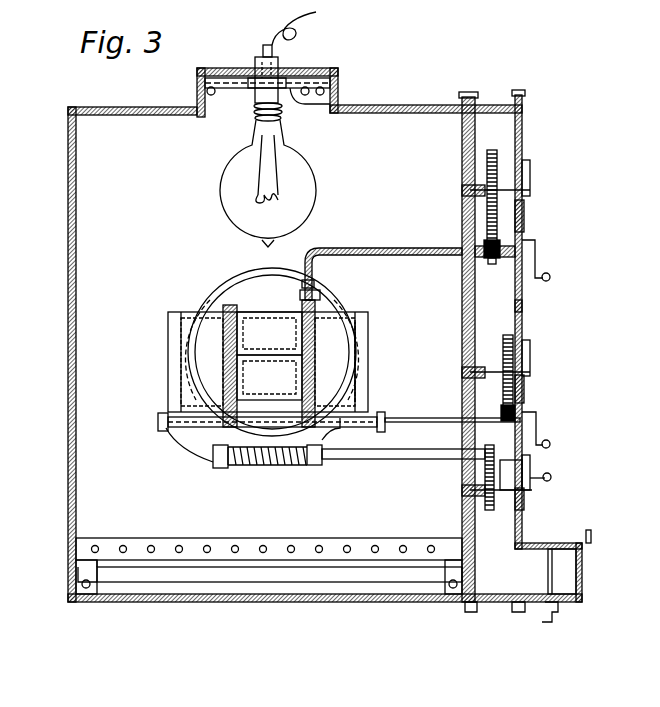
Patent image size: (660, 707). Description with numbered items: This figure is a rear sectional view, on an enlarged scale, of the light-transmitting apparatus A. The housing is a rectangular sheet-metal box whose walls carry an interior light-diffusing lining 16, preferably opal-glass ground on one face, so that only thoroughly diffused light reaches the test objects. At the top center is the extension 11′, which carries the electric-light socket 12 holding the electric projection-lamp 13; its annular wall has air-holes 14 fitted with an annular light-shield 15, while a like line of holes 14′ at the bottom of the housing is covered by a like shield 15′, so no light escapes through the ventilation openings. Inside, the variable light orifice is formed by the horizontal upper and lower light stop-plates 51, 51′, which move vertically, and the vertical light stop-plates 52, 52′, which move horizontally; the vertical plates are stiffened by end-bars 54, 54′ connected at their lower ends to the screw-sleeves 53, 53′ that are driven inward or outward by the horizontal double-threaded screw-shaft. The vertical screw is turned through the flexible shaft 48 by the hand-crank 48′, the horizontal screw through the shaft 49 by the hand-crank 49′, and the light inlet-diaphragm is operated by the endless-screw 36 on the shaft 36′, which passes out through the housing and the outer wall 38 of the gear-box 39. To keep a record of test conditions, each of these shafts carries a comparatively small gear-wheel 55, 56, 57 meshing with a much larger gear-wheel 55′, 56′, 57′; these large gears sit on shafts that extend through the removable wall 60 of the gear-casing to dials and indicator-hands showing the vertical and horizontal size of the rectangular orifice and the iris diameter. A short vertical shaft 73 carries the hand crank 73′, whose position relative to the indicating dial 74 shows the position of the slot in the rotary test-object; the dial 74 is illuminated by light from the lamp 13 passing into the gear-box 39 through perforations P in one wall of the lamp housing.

The apparatus A is at (393, 110).
The top central extension 11′ is at (215, 75).
The electric-light socket 12 is at (282, 65).
The electric projection-lamp 13 is at (268, 183).
The air-holes 14 is at (340, 90).
The line of holes 14′ is at (88, 588).
The annular light-shield 15 is at (214, 88).
The light-shield 15′ is at (269, 560).
The light-diffusing lining 16 is at (124, 115).
The endless-screw 36 is at (262, 462).
The shaft 36′ is at (375, 459).
The outer wall 38 is at (522, 305).
The gear-box 39 is at (494, 264).
The shaft 48 is at (350, 248).
The hand-crank 48′ is at (536, 258).
The shaft 49 is at (400, 418).
The hand-crank 49′ is at (537, 420).
The upper light stop-plate 51 is at (269, 333).
The lower light stop-plate 51′ is at (269, 377).
The vertical light stop-plate 52 is at (202, 362).
The vertical light stop-plate 52′ is at (335, 362).
The screw-sleeve 53 is at (200, 434).
The screw-sleeve 53′ is at (358, 452).
The stiffening end-bar 54 is at (170, 366).
The stiffening end-bar 54′ is at (366, 368).
The gear-wheel 55 is at (496, 244).
The gear-wheel 55′ is at (492, 150).
The gear-wheel 56 is at (504, 410).
The gear-wheel 56′ is at (505, 345).
The gear-wheel 57 is at (484, 472).
The gear-wheel 57′ is at (495, 490).
The removable wall 60 is at (522, 140).
The compartment 73 is at (583, 588).
The hand crank 73′ is at (591, 538).
The indicating dial 74 is at (565, 548).
The perforations P is at (462, 152).